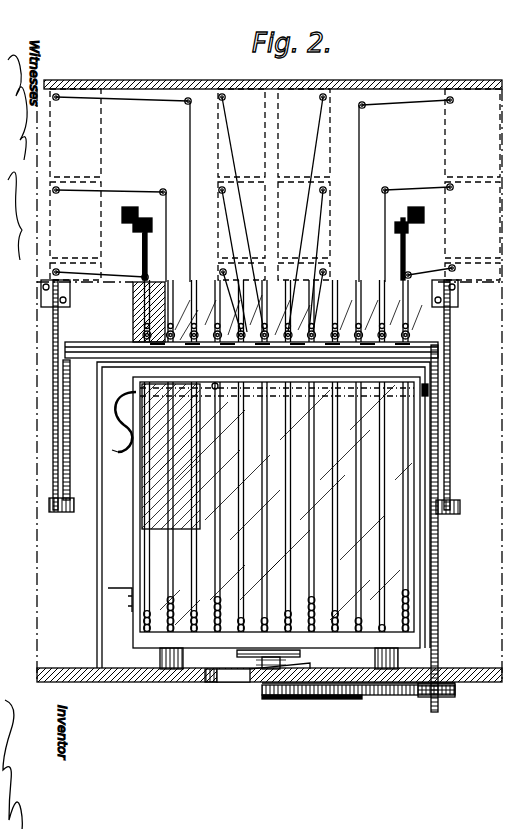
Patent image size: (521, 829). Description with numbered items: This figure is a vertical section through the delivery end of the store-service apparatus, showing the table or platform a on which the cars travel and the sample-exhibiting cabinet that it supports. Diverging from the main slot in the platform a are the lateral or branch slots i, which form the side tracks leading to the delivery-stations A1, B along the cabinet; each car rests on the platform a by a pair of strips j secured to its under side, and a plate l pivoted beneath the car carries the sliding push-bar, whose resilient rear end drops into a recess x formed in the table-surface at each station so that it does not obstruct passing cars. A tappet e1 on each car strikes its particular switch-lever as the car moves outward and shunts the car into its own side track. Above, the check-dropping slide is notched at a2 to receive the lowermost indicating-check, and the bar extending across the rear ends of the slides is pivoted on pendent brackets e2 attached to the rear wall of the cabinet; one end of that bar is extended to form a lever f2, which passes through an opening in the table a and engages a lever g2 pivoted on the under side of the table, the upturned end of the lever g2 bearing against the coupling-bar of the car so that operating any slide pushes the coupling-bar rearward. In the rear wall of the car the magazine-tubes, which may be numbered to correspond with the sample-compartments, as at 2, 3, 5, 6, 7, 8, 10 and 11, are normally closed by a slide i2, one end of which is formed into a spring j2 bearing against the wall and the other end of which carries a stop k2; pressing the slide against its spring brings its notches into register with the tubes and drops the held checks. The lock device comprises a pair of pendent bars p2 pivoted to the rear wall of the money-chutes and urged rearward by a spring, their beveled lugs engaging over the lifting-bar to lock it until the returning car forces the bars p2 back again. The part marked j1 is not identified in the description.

The platform a is at (120, 686).
The contact 2 is at (75, 231).
The contact 3 is at (75, 133).
The contact 5 is at (241, 231).
The contact 6 is at (241, 133).
The contact 7 is at (304, 133).
The contact 8 is at (304, 231).
The contact 10 is at (472, 133).
The contact 11 is at (472, 231).
The delivery-station B is at (273, 243).
The pendent bars p2 is at (140, 254).
The notch a2 is at (88, 345).
The pendent brackets e2 is at (460, 432).
The lever f2 is at (438, 624).
The stop k2 is at (428, 388).
The slide i2 is at (134, 392).
The spring j2 is at (118, 450).
The recording panel A1 is at (165, 527).
The tappet e1 is at (120, 583).
The strips j is at (163, 682).
The branch slots i is at (206, 684).
The recess x is at (246, 684).
The plate l is at (290, 654).
The rail j1 is at (376, 668).
The lever g2 is at (406, 695).